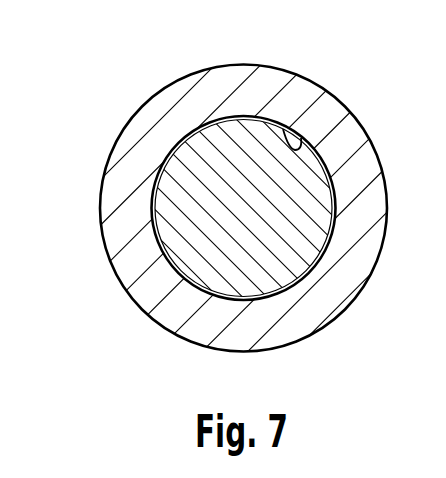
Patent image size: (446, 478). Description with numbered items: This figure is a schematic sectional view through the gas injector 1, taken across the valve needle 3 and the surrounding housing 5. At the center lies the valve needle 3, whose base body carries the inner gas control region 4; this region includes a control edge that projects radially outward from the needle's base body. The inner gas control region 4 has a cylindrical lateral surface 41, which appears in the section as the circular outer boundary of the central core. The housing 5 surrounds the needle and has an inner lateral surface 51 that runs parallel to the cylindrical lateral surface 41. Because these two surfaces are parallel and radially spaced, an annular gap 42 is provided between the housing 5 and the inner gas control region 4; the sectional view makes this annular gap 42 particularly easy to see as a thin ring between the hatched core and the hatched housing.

The gas injector 1 is at (101, 92).
The valve needle 3 is at (172, 168).
The inner gas control region 4 is at (233, 154).
The cylindrical lateral surface 41 is at (183, 122).
The annular gap 42 is at (282, 130).
The housing 5 is at (113, 196).
The inner lateral surface 51 is at (308, 143).